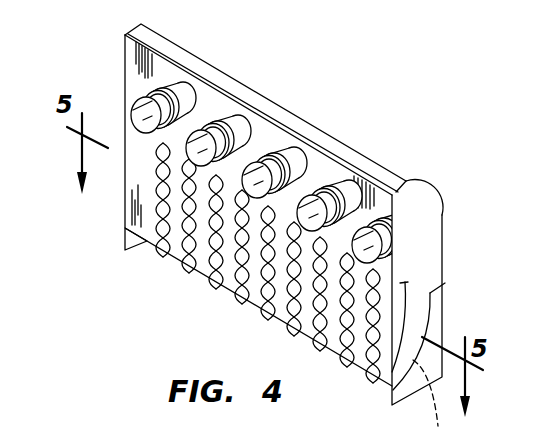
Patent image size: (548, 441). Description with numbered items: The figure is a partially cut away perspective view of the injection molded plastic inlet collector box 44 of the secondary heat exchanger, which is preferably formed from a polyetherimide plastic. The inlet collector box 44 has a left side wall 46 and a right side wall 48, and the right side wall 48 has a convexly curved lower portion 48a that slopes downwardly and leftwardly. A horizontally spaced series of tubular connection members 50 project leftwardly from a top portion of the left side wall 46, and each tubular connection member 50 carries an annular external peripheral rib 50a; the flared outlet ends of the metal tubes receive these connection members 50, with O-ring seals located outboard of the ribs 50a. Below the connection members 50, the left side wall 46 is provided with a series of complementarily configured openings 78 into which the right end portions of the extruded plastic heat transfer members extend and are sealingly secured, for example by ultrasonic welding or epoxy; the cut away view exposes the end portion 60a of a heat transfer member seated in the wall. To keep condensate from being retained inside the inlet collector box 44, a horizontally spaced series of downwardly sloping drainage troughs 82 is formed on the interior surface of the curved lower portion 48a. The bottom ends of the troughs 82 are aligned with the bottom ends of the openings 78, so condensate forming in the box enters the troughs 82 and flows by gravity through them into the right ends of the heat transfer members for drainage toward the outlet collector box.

The inlet collector box 44 is at (358, 114).
The left side wall 46 is at (138, 65).
The right side wall 48 is at (445, 217).
The convexly curved lower portion 48a is at (449, 400).
The tubular connection members 50 is at (274, 143).
The annular external peripheral rib 50a is at (190, 90).
The curved guide surface 60a is at (320, 436).
The openings 78 is at (208, 275).
The drainage troughs 82 is at (408, 282).